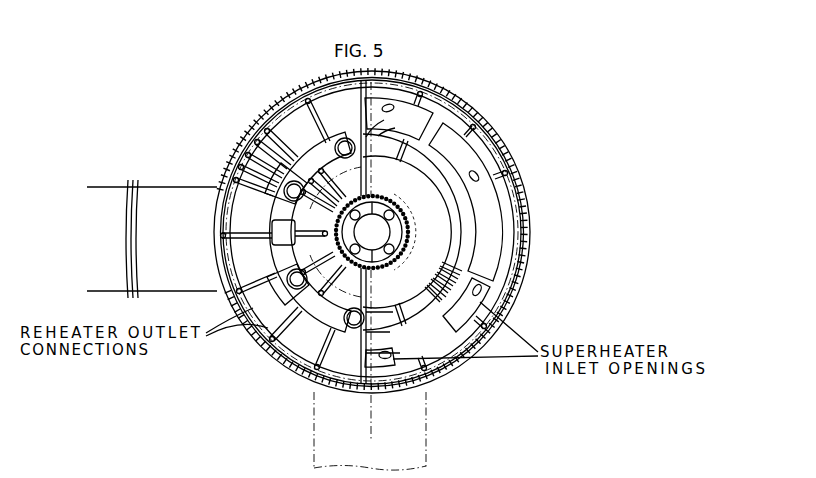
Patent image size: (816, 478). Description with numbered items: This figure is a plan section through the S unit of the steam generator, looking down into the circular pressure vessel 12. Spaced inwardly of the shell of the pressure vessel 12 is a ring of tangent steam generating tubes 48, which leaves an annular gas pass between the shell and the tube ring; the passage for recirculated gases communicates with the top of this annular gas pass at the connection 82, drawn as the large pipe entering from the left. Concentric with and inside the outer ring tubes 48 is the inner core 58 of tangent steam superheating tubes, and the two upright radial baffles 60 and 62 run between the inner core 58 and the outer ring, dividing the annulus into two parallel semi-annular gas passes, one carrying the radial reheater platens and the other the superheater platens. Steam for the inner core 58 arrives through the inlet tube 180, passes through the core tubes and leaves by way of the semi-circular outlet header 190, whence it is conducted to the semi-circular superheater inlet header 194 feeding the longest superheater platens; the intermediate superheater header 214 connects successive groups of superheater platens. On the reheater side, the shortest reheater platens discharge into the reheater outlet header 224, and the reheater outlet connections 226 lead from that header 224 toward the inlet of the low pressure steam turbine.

The pressure vessel 12 is at (466, 113).
The steam generating tubes 48 is at (518, 249).
The gas passage connection 82 is at (190, 248).
The upright radial baffle 62 is at (361, 127).
The upright radial baffle 60 is at (366, 345).
The semi-circular outlet header 190 is at (392, 236).
The reheater outlet header 224 is at (325, 308).
The reheater outlet connections 226 is at (306, 175).
The inlet tube 180 is at (338, 237).
The inner core 58 is at (406, 240).
The intermediate superheater header 214 is at (436, 212).
The superheater inlet header 194 is at (427, 324).